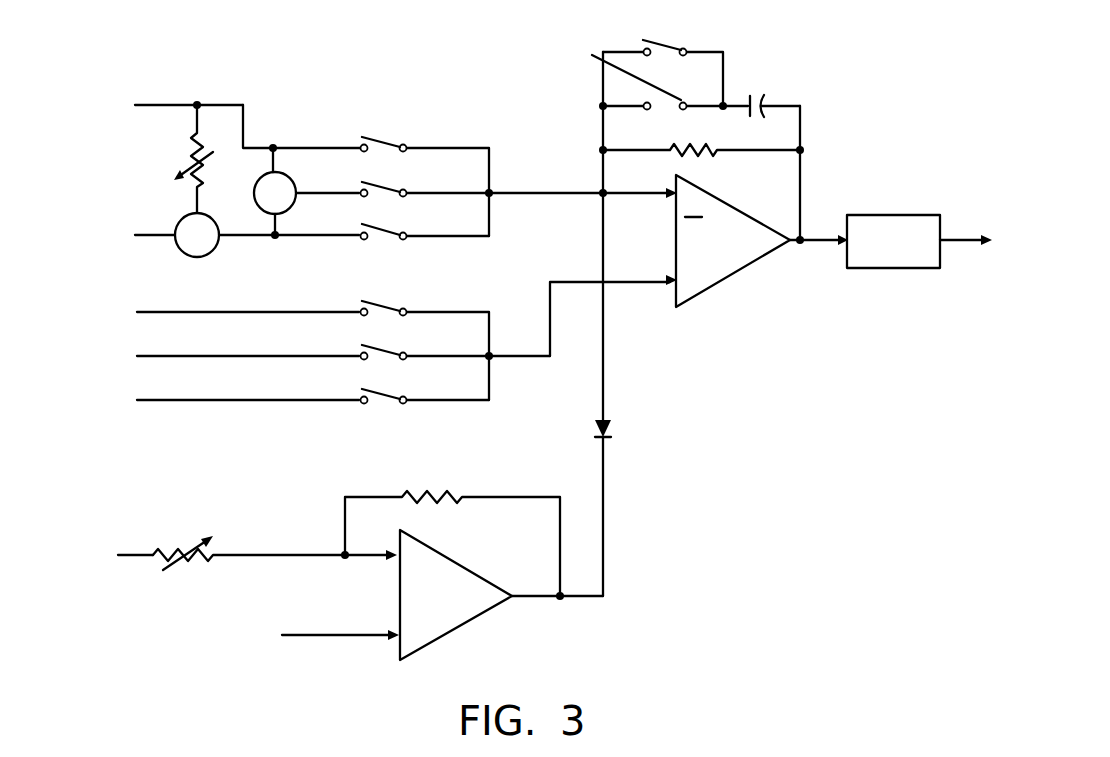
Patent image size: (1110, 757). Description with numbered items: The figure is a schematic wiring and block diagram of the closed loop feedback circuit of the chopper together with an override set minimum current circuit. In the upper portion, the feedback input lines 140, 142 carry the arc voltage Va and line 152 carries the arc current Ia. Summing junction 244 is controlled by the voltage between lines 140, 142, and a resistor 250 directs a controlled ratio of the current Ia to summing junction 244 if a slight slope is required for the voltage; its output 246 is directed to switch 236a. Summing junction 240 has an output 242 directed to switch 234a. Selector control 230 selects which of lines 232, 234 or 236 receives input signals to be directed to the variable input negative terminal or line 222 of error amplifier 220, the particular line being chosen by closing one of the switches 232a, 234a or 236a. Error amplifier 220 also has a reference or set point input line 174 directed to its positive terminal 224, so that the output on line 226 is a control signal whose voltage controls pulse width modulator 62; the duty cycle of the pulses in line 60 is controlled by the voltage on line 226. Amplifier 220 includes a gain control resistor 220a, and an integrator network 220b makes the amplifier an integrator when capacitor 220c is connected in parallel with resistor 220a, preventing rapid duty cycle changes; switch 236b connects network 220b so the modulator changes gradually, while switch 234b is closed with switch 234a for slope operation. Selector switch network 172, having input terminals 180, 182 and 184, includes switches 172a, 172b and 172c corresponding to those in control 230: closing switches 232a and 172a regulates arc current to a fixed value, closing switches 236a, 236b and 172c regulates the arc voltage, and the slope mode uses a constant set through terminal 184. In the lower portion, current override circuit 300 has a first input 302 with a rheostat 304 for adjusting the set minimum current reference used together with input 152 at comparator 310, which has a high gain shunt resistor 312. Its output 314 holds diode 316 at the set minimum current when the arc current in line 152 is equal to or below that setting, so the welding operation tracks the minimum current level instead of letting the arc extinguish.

The input line 152 is at (148, 105).
The resistor 250 is at (188, 148).
The summing junction 240 is at (272, 171).
The output 242 is at (357, 180).
The summing junction 244 is at (208, 253).
The output 246 is at (292, 238).
The input line 140 is at (130, 263).
The input line 142 is at (155, 240).
The selector control 230 is at (453, 158).
The switch 232a is at (370, 135).
The line 232 is at (463, 148).
The switch 234a is at (388, 187).
The line 234 is at (457, 193).
The switch 236a is at (383, 227).
The line 236 is at (460, 238).
The switch 234b is at (663, 42).
The switch 236b is at (636, 73).
The capacitor 220c is at (758, 94).
The integrator network 220b is at (793, 92).
The gain control resistor 220a is at (710, 148).
The error amplifier 220 is at (733, 275).
The variable input line 222 is at (635, 197).
The positive terminal 224 is at (673, 286).
The output line 226 is at (817, 238).
The pulse width modulator 62 is at (892, 268).
The line 60 is at (953, 237).
The terminal 180 is at (247, 314).
The terminal 184 is at (247, 358).
The terminal 182 is at (247, 402).
The selector switch network 172 is at (421, 331).
The switch 172a is at (384, 304).
The switch 172b is at (390, 350).
The switch 172c is at (390, 395).
The set point input line 174 is at (570, 280).
The diode 316 is at (612, 426).
The current override circuit 300 is at (360, 544).
The first input 302 is at (140, 556).
The rheostat 304 is at (180, 548).
The high gain shunt resistor 312 is at (428, 500).
The comparator 310 is at (458, 623).
The output 314 is at (578, 599).